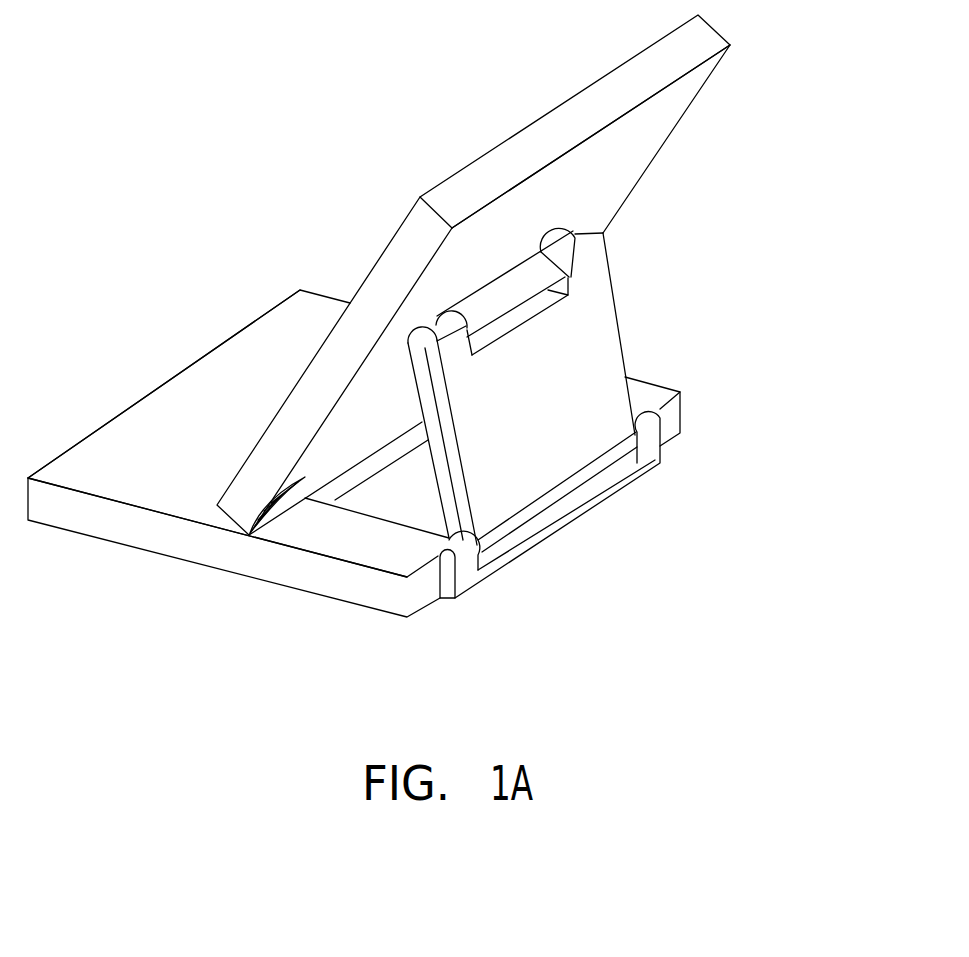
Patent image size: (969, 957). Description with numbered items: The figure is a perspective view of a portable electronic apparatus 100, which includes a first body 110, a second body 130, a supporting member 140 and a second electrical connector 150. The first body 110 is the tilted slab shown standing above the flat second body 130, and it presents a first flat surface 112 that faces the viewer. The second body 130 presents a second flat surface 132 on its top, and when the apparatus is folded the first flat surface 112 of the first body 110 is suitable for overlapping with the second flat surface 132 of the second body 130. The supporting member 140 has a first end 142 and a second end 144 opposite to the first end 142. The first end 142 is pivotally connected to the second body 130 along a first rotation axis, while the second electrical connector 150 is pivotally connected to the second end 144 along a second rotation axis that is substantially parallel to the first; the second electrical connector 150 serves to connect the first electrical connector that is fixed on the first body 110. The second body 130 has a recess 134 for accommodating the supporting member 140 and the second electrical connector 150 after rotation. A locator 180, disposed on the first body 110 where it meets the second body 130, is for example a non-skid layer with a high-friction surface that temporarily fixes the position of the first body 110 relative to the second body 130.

The portable electronic apparatus 100 is at (899, 623).
The first body 110 is at (707, 37).
The first flat surface 112 is at (669, 96).
The second body 130 is at (396, 593).
The second flat surface 132 is at (133, 476).
The recess 134 is at (405, 498).
The supporting member 140 is at (603, 340).
The first end 142 is at (610, 443).
The second end 144 is at (456, 345).
The second electrical connector 150 is at (540, 275).
The locator 180 is at (273, 518).